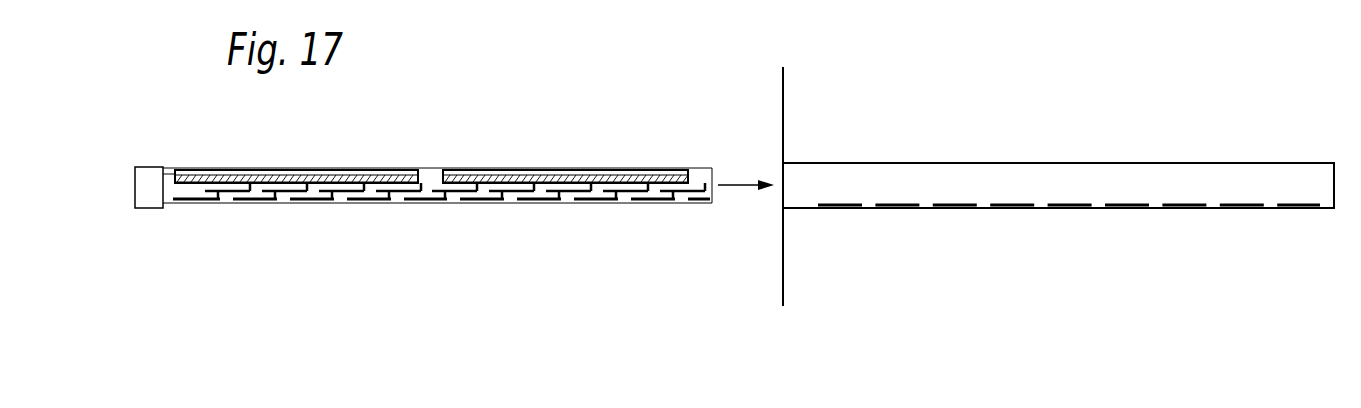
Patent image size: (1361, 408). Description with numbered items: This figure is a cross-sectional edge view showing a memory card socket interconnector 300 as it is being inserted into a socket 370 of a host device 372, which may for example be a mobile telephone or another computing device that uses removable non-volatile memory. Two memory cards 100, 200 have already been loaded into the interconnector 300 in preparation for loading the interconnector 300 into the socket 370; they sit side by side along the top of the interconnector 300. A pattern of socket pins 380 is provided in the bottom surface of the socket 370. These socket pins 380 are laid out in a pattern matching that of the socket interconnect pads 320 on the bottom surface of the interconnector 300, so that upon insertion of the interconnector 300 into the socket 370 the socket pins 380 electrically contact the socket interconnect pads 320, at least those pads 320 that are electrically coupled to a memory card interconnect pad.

The memory card 100 is at (330, 169).
The memory card 200 is at (577, 169).
The memory card socket interconnector 300 is at (282, 203).
The socket interconnect pads 320 is at (418, 203).
The socket 370 is at (1065, 180).
The host device 372 is at (783, 98).
The socket pins 380 is at (892, 206).